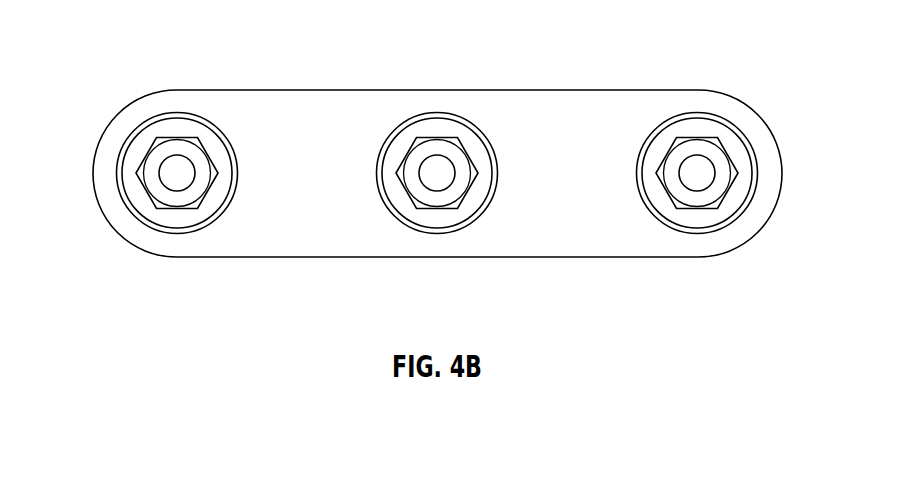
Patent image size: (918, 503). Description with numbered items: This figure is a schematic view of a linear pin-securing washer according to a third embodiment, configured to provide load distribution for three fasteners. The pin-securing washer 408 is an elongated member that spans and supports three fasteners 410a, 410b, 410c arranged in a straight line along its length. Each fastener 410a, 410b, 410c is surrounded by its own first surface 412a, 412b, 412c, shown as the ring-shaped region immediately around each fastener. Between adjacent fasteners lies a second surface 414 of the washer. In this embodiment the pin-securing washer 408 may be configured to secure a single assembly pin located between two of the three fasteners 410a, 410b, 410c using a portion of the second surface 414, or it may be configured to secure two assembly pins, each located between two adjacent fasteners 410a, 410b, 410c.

The pin-securing washer 408 is at (592, 90).
The fastener 410a is at (173, 217).
The fastener 410b is at (437, 218).
The fastener 410c is at (697, 217).
The first surface 412a is at (140, 113).
The first surface 412b is at (438, 107).
The first surface 412c is at (739, 122).
The second surface 414 is at (313, 188).